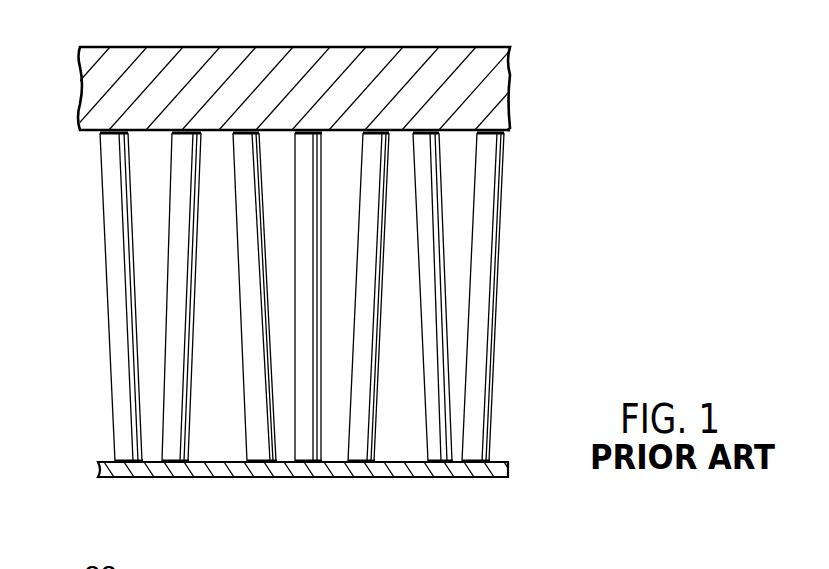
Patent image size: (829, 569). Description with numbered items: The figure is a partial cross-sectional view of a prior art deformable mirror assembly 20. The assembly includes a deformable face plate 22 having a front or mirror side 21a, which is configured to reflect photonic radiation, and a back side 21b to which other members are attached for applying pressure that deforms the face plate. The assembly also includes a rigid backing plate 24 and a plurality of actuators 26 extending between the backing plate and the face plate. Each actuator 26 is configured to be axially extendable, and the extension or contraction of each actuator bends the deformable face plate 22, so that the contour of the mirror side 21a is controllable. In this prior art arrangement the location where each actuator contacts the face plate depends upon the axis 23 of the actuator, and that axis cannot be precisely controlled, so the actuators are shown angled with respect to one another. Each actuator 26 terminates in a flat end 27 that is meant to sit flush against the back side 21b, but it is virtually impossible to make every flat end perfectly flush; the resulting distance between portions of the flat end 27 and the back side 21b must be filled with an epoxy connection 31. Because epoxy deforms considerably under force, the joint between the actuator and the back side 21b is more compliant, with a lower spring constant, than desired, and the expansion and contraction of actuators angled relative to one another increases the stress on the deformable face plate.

The mirror assembly 20 is at (550, 66).
The rigid backing plate 24 is at (378, 47).
The actuators 26 is at (308, 297).
The axis 23 is at (313, 178).
The flat end 27 is at (139, 464).
The epoxy connection 31 is at (140, 459).
The deformable face plate 22 is at (268, 480).
The mirror side 21a is at (203, 478).
The back side 21b is at (407, 458).